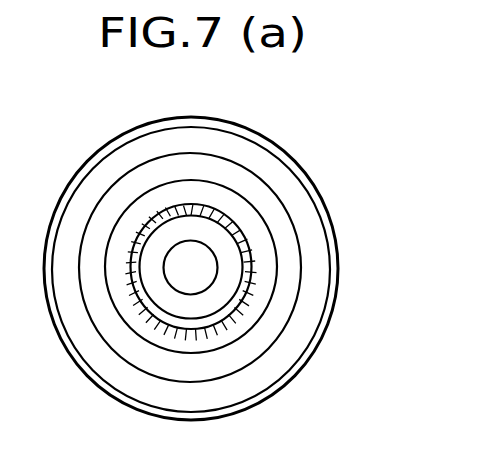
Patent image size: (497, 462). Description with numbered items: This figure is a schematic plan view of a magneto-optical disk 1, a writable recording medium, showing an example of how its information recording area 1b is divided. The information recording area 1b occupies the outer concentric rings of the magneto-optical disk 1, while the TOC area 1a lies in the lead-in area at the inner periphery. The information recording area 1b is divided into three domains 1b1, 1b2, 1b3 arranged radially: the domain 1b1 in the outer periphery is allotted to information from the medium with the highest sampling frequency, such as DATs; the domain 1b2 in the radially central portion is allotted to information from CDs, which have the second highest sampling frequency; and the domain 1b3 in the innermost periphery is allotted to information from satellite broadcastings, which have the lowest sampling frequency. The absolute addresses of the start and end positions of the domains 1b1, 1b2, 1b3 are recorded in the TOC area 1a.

The magneto-optical disk 1 is at (329, 197).
The TOC area 1a is at (228, 308).
The information recording area 1b is at (278, 178).
The domain 1b1 is at (312, 320).
The domain 1b2 is at (298, 275).
The domain 1b3 is at (262, 250).